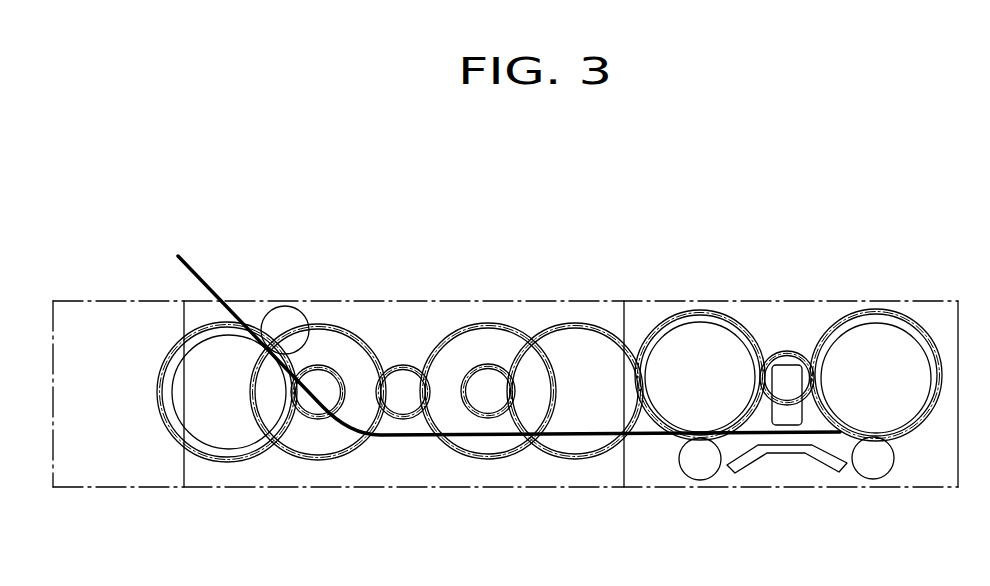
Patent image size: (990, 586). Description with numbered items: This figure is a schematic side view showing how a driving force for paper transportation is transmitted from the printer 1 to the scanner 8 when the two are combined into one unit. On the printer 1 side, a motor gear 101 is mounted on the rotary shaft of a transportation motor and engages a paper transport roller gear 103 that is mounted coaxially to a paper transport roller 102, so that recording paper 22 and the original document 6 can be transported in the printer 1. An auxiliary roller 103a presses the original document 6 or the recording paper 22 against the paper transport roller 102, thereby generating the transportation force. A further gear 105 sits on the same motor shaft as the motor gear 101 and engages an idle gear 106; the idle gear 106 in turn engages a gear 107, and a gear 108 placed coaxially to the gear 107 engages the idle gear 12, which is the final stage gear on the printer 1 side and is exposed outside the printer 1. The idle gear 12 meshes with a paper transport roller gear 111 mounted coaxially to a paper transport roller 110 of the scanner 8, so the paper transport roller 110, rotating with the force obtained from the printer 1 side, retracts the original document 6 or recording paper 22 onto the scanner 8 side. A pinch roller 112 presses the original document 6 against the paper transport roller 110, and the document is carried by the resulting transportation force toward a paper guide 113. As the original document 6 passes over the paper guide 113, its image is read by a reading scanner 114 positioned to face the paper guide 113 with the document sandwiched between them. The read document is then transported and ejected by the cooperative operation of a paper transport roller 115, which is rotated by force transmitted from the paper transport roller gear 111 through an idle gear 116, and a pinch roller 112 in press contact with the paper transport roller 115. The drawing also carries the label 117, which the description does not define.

The printer 1 is at (109, 490).
The original document 6 is at (509, 305).
The recording paper 22 is at (198, 271).
The scanner 8 is at (826, 296).
The idle gear 12 is at (593, 325).
The motor gear 101 is at (333, 370).
The paper transport roller 102 is at (242, 446).
The paper transport roller gear 103 is at (215, 462).
The auxiliary roller 103a is at (295, 306).
The gear 105 is at (372, 345).
The idle gear 106 is at (412, 418).
The gear 107 is at (505, 325).
The gear 108 is at (472, 418).
The paper transport roller 110 is at (705, 312).
The paper transport roller gear 111 is at (735, 325).
The pinch roller 112 is at (688, 474).
The paper guide 113 is at (803, 446).
The reading scanner 114 is at (782, 372).
The paper transport roller 115 is at (900, 325).
The idle gear 116 is at (781, 426).
The pressure roller sleeve 117 is at (918, 428).